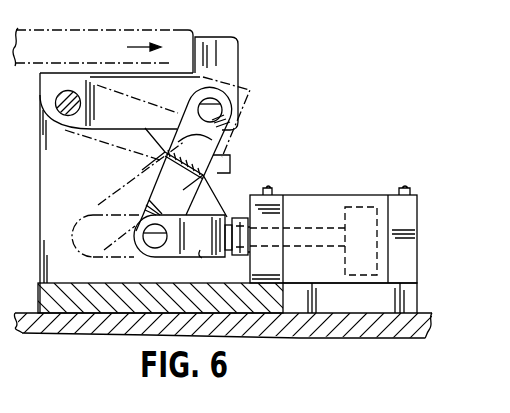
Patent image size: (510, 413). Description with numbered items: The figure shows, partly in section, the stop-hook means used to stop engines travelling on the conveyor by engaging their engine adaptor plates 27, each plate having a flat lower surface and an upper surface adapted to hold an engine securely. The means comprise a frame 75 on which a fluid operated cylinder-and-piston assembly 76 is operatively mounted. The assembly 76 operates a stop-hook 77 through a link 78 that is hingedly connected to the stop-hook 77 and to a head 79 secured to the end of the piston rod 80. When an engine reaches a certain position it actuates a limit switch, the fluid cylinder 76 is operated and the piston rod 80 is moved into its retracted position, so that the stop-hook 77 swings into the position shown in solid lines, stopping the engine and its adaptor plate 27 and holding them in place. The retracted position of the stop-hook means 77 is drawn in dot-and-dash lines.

The engine adaptor plate 27 is at (181, 31).
The frame 75 is at (38, 235).
The fluid operated cylinder-and-piston assembly 76 is at (312, 195).
The stop-hook 77 is at (236, 53).
The link 78 is at (218, 170).
The head 79 is at (204, 251).
The piston rod 80 is at (310, 230).